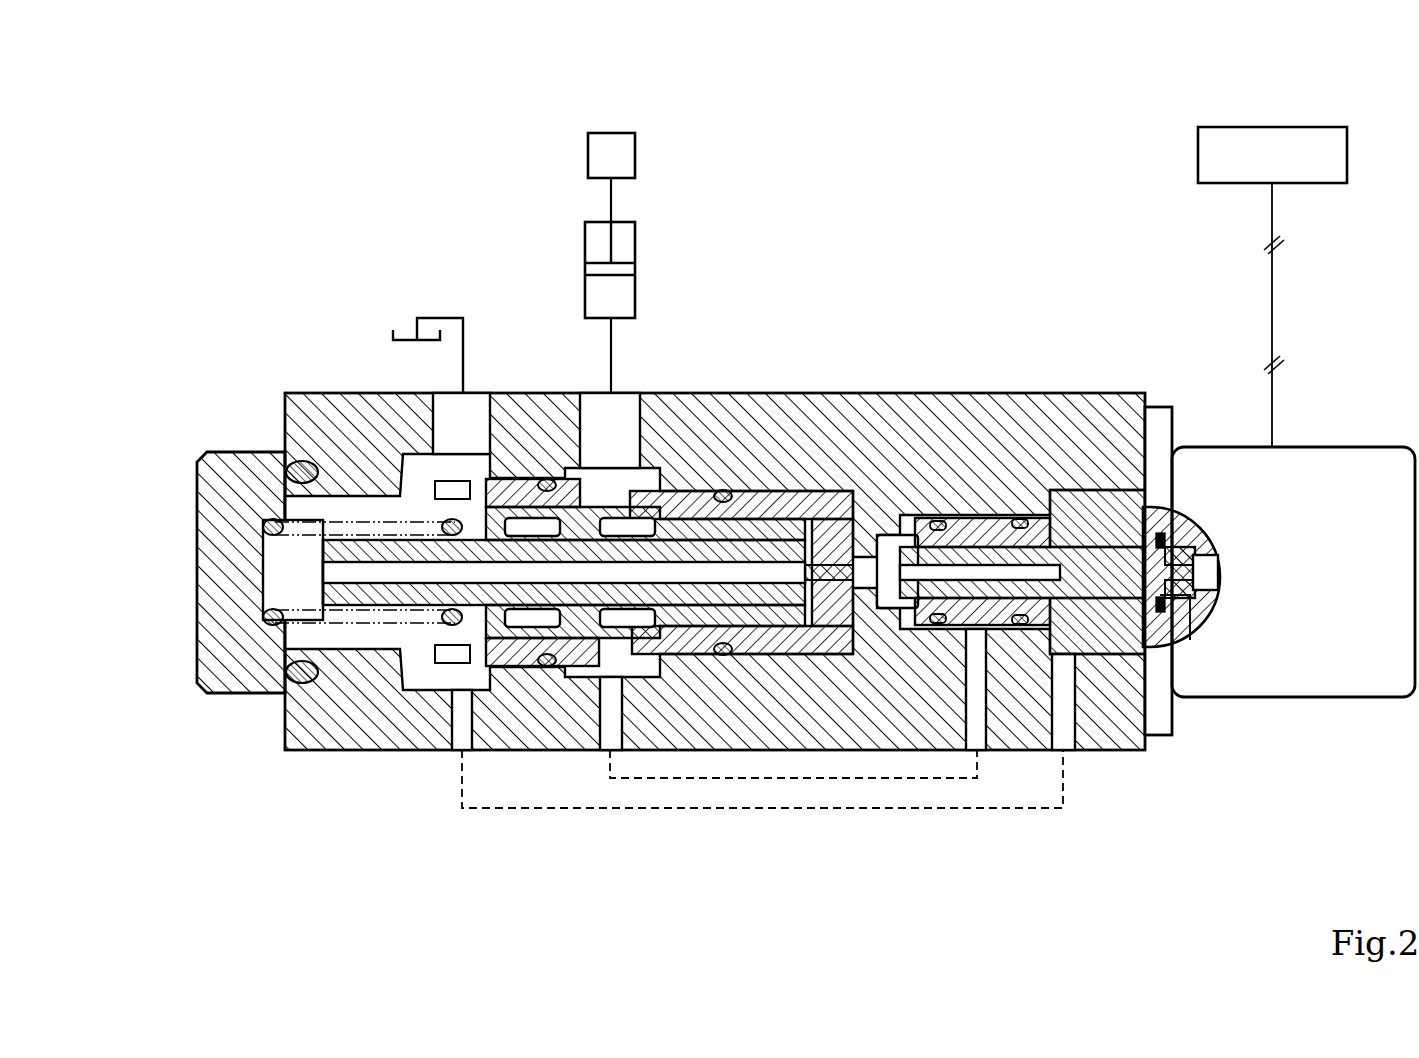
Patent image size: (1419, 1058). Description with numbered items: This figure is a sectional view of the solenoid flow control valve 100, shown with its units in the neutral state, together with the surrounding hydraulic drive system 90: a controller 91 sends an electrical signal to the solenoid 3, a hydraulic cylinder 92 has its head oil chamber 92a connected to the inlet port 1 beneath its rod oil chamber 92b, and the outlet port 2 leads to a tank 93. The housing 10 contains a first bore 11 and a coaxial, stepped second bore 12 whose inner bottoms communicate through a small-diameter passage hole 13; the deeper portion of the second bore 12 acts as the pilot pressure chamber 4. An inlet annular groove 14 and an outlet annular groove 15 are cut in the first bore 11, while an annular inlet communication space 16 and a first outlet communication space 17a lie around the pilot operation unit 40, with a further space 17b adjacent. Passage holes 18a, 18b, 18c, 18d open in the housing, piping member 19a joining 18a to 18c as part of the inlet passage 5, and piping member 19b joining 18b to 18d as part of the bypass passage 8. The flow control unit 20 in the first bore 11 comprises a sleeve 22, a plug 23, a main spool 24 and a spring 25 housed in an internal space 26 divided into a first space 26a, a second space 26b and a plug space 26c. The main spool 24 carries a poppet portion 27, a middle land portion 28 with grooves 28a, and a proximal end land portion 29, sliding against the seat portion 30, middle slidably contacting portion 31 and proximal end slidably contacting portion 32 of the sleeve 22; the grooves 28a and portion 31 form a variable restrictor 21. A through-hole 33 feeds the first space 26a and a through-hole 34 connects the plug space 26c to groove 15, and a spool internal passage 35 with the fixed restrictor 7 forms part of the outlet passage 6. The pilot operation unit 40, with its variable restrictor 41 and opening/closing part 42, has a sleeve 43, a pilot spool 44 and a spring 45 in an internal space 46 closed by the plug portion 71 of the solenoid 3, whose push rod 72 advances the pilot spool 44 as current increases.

The inlet port 1 is at (620, 425).
The outlet port 2 is at (448, 410).
The solenoid 3 is at (1360, 455).
The pilot pressure chamber 4 is at (890, 600).
The inlet passage 5 is at (918, 790).
The outlet passage 6 is at (288, 750).
The fixed restrictor 7 is at (855, 600).
The bypass passage 8 is at (942, 820).
The housing 10 is at (288, 395).
The first bore 11 is at (905, 600).
The second bore 12 is at (1095, 495).
The passage hole 13 is at (925, 520).
The inlet annular groove 14 is at (660, 470).
The outlet annular groove 15 is at (398, 512).
The inlet communication space 16 is at (945, 525).
The first outlet communication space 17a is at (1072, 545).
The flange 17b is at (1150, 470).
The passage hole 18a is at (612, 748).
The passage hole 18b is at (462, 748).
The passage hole 18c is at (976, 748).
The passage hole 18d is at (1063, 748).
The piping member 19a is at (715, 780).
The piping member 19b is at (680, 810).
The flow control unit 20 is at (372, 480).
The variable restrictor 21 is at (586, 480).
The sleeve 22 is at (822, 560).
The plug 23 is at (230, 462).
The main spool 24 is at (343, 582).
The spring 25 is at (290, 680).
The internal space 26 is at (292, 596).
The first space 26a is at (645, 520).
The second space 26b is at (512, 520).
The plug space 26c is at (278, 523).
The poppet portion 27 is at (495, 640).
The middle land portion 28 is at (530, 630).
The grooves 28a is at (600, 630).
The proximal end land portion 29 is at (775, 545).
The seat portion 30 is at (540, 665).
The middle slidably contacting portion 31 is at (548, 530).
The proximal end slidably contacting portion 32 is at (735, 655).
The through-hole 33 is at (612, 640).
The through-hole 34 is at (440, 625).
The spool internal passage 35 is at (775, 590).
The pilot operation unit 40 is at (1090, 690).
The variable restrictor 41 is at (970, 560).
The opening/closing part 42 is at (1008, 545).
The sleeve 43 is at (960, 545).
The pilot spool 44 is at (1130, 605).
The spring 45 is at (1158, 735).
The internal space 46 is at (1198, 620).
The plug portion 71 is at (1215, 528).
The push rod 72 is at (1213, 575).
The hydraulic drive system 90 is at (497, 135).
The controller 91 is at (1312, 127).
The hydraulic cylinder 92 is at (585, 237).
The head oil chamber 92a is at (632, 293).
The rod oil chamber 92b is at (632, 243).
The tank 93 is at (393, 335).
The solenoid flow control valve 100 is at (290, 325).